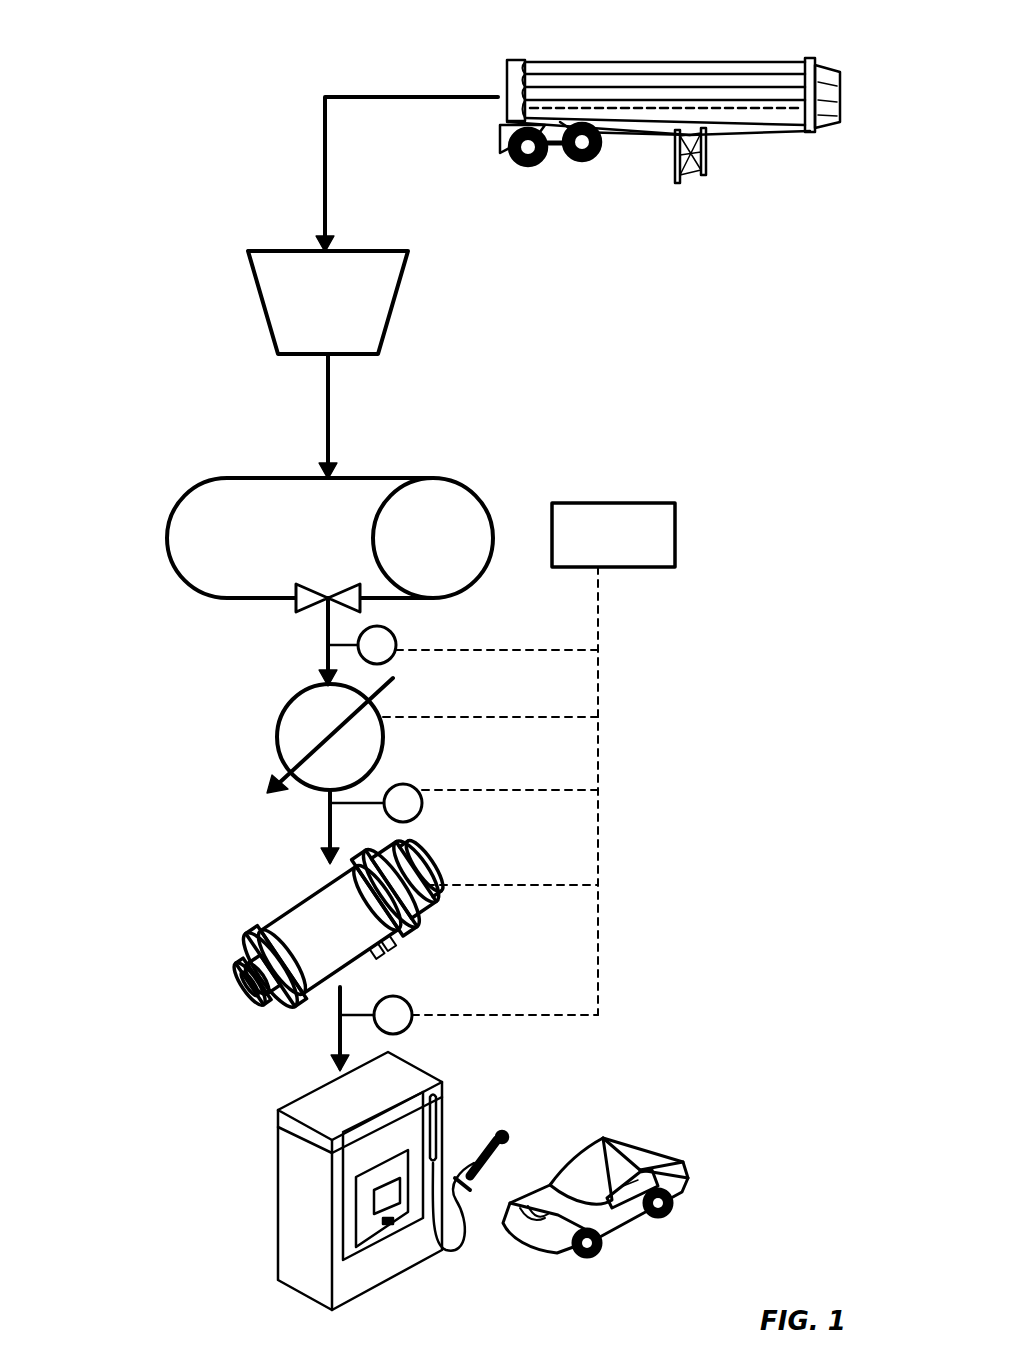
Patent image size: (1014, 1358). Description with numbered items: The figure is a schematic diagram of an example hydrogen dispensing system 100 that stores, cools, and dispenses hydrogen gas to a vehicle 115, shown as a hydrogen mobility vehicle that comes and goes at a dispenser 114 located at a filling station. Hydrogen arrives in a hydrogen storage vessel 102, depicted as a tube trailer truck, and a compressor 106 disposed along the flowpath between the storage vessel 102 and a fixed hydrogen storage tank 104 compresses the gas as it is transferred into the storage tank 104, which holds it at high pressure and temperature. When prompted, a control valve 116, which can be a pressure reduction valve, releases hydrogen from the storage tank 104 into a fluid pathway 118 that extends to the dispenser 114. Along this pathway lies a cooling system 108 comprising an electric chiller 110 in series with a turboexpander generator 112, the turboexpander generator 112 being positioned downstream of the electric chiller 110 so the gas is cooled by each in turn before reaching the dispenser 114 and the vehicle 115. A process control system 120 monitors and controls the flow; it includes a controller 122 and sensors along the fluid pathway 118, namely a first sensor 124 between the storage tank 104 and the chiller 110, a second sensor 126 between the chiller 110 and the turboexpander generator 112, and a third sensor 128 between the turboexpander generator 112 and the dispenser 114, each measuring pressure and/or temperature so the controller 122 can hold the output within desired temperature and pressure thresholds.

The hydrogen dispensing system 100 is at (150, 136).
The hydrogen storage vessel 102 is at (505, 68).
The hydrogen storage tank 104 is at (192, 488).
The compressor 106 is at (252, 286).
The cooling system 108 is at (205, 818).
The electric chiller 110 is at (277, 740).
The turboexpander generator 112 is at (263, 935).
The dispenser 114 is at (278, 1206).
The vehicle 115 is at (640, 1138).
The control valve 116 is at (297, 609).
The fluid pathway 118 is at (325, 656).
The process control system 120 is at (675, 487).
The controller 122 is at (613, 535).
The first sensor 124 is at (398, 640).
The second sensor 126 is at (422, 806).
The third sensor 128 is at (412, 1005).